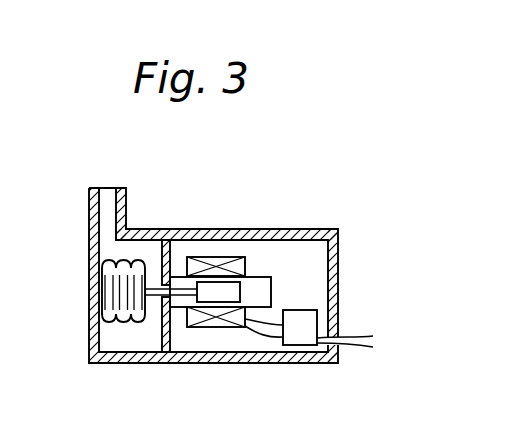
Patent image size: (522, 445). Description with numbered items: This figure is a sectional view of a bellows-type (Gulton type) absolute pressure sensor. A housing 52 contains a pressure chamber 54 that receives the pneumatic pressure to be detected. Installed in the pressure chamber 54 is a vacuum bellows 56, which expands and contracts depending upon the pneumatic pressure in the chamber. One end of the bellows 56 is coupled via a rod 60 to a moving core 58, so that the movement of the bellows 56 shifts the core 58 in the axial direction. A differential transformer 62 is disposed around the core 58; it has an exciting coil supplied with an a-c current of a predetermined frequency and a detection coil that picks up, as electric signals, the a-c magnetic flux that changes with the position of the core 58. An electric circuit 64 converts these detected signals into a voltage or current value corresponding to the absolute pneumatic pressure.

The housing 52 is at (339, 259).
The pressure chamber 54 is at (145, 247).
The vacuum bellows 56 is at (103, 294).
The moving core 58 is at (242, 290).
The rod 60 is at (159, 298).
The differential transformer 62 is at (217, 262).
The electric circuit 64 is at (302, 345).